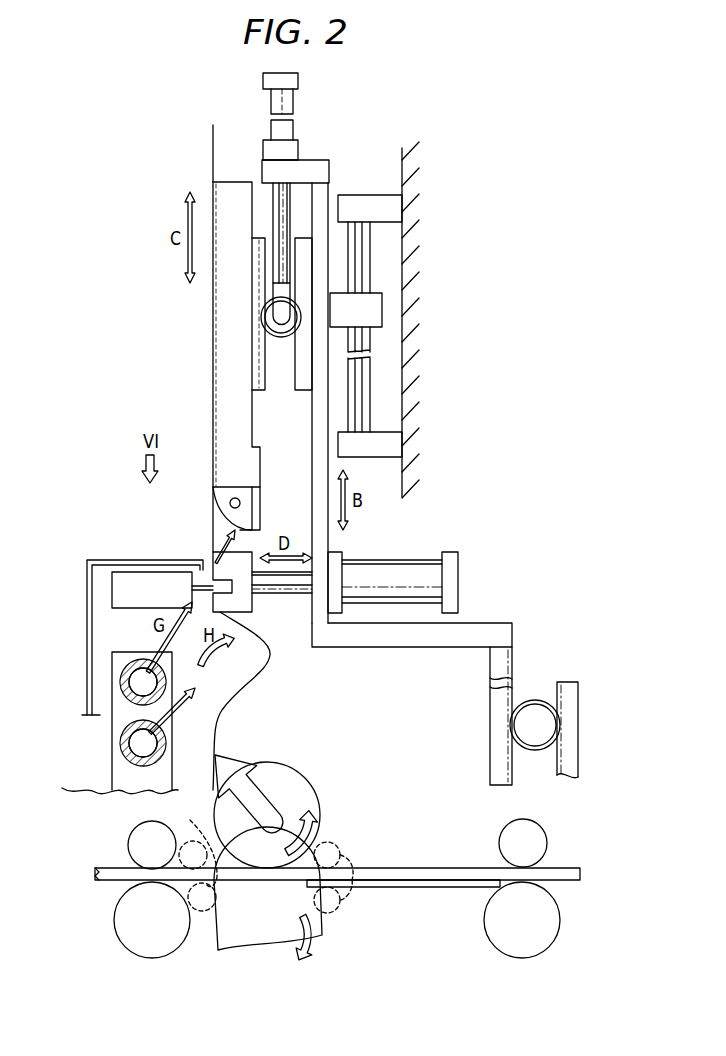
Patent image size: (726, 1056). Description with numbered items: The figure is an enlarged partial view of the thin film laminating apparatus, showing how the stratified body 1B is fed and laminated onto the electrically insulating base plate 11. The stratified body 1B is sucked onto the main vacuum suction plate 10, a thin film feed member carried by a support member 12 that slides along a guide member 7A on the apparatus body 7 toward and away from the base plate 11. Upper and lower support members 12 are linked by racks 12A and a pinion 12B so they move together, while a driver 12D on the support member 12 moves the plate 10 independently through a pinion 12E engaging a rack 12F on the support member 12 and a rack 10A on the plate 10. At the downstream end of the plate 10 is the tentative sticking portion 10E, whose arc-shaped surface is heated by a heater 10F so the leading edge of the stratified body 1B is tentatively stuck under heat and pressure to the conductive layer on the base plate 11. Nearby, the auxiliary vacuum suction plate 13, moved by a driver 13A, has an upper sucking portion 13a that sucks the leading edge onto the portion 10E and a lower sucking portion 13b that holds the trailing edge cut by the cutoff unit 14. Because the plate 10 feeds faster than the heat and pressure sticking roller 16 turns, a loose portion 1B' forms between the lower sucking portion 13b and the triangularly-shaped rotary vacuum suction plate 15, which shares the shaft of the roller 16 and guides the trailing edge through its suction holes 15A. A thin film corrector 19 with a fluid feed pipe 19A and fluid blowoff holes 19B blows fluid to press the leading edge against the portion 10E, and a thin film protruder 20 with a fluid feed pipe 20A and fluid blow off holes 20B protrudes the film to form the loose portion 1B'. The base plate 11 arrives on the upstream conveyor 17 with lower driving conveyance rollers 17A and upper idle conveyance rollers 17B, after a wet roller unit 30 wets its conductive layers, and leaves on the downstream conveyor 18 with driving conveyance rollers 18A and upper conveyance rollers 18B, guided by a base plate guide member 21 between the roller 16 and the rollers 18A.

The stratified body 1B is at (177, 338).
The loose portion 1B' is at (266, 701).
The apparatus body 7 is at (426, 323).
The guide member 7A is at (356, 256).
The main vacuum suction plate 10 is at (226, 319).
The rack 10A is at (253, 360).
The tentative sticking portion 10E is at (218, 520).
The heater 10F is at (233, 498).
The electrically insulating base plate 11 is at (108, 872).
The support member 12 is at (320, 177).
The rack 12A is at (498, 705).
The pinion 12B is at (535, 713).
The driver 12D is at (284, 104).
The pinion 12E is at (262, 332).
The rack 12F is at (300, 285).
The auxiliary vacuum suction plate 13 is at (243, 603).
The upper sucking portion 13a is at (213, 556).
The lower sucking portion 13b is at (185, 590).
The driver 13A is at (397, 573).
The cutoff unit 14 is at (160, 568).
The rotary vacuum suction plate 15 is at (265, 800).
The suction holes 15A is at (240, 760).
The heat and pressure sticking roller 16 is at (303, 797).
The upstream conveyor 17 is at (108, 898).
The lower driving conveyance rollers 17A is at (132, 935).
The upper idle conveyance rollers 17B is at (135, 843).
The downstream conveyor 18 is at (554, 903).
The driving conveyance rollers 18A is at (530, 943).
The upper conveyance rollers 18B is at (533, 843).
The thin film corrector 19 is at (91, 659).
The fluid feed pipe 19A is at (128, 682).
The fluid blowoff holes 19B is at (150, 655).
The thin film protruder 20 is at (93, 754).
The fluid feed pipe 20A is at (137, 767).
The fluid blow off holes 20B is at (123, 733).
The base plate guide member 21 is at (427, 887).
The wet roller unit 30 is at (193, 845).